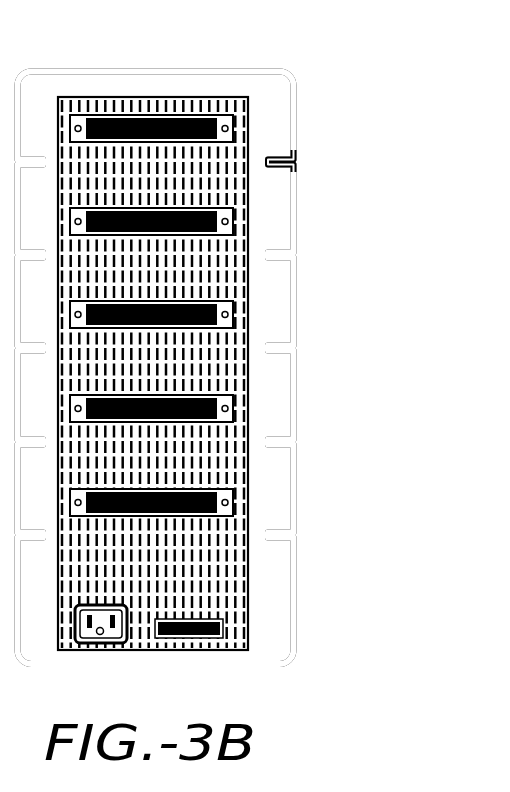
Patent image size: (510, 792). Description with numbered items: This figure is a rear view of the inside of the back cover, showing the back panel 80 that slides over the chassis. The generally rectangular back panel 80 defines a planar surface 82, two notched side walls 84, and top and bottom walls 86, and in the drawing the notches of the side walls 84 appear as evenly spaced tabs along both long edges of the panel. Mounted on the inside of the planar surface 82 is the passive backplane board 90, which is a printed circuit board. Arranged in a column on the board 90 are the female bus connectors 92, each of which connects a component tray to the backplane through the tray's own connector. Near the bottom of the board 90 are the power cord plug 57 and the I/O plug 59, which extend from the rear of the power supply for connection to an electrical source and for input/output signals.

The back panel 80 is at (333, 327).
The planar surface 82 is at (200, 86).
The notched side walls 84 is at (292, 165).
The top and bottom walls 86 is at (244, 70).
The passive backplane board 90 is at (223, 571).
The female bus connectors 92 is at (226, 417).
The power cord plug 57 is at (95, 643).
The I/O plug 59 is at (177, 639).